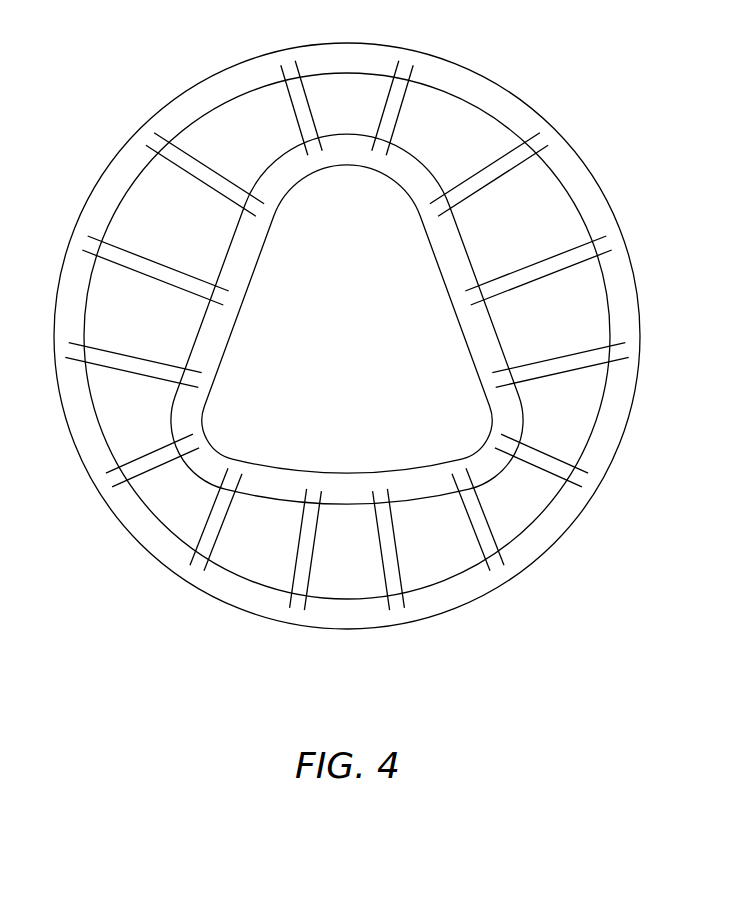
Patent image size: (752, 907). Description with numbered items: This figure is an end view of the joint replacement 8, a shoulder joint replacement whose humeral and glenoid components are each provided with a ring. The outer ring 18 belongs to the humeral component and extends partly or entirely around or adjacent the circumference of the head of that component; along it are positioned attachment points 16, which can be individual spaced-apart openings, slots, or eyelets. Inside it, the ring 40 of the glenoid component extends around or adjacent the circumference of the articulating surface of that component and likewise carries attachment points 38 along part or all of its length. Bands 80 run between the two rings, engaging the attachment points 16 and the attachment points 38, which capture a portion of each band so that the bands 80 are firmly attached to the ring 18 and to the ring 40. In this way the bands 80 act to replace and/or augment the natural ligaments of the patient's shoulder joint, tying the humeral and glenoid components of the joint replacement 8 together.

The joint replacement 8 is at (123, 72).
The attachment points 16 is at (408, 56).
The ring 18 is at (487, 90).
The attachment points 38 is at (378, 146).
The ring 40 is at (248, 262).
The bands 80 is at (148, 268).